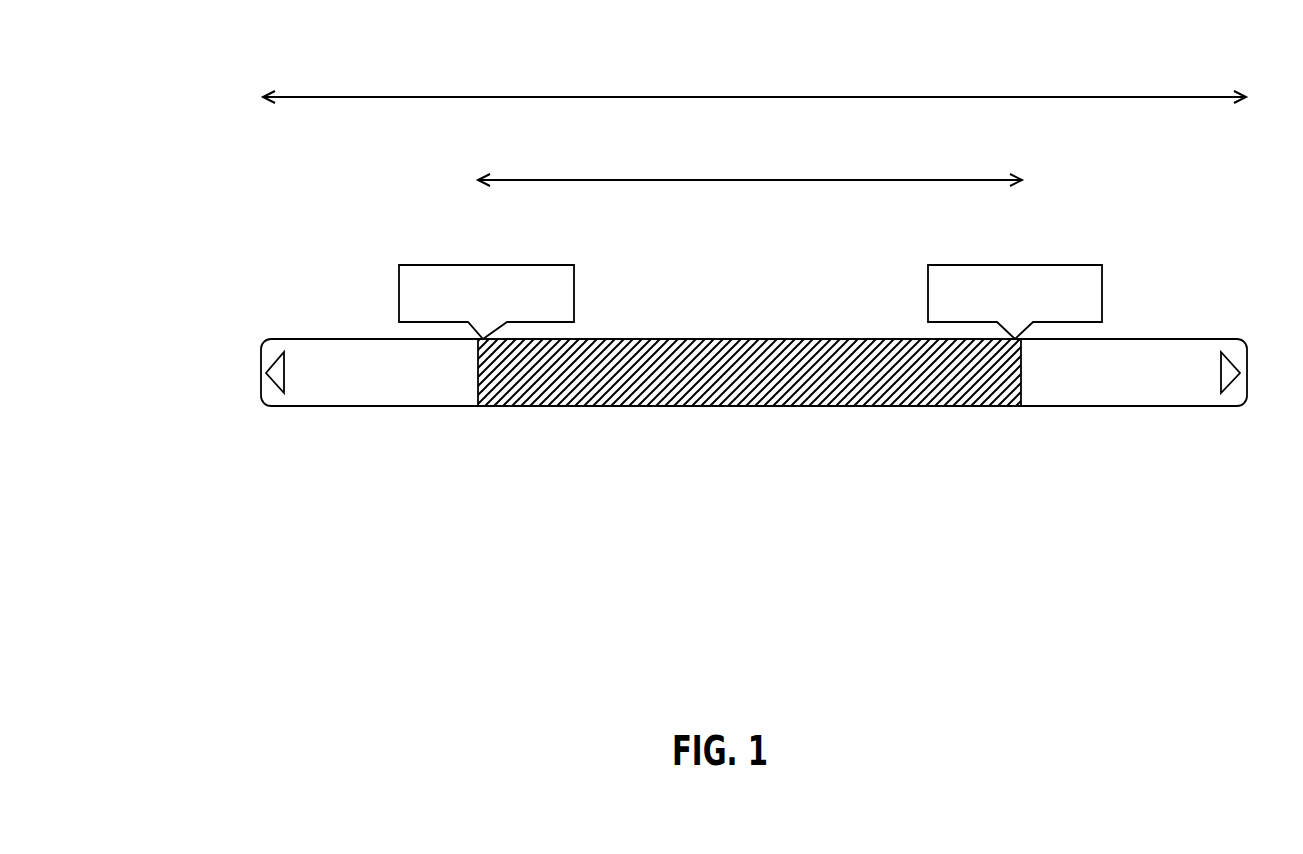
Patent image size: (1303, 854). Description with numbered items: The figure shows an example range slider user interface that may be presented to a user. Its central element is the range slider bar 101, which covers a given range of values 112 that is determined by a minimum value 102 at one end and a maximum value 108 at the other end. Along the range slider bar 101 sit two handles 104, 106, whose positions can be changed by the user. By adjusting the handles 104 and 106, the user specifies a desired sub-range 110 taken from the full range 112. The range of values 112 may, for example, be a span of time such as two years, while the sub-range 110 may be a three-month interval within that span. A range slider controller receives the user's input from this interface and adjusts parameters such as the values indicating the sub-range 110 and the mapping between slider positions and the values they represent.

The range slider bar 101 is at (193, 368).
The minimum value 102 is at (281, 426).
The handle 104 is at (478, 426).
The handle 106 is at (1021, 426).
The maximum value 108 is at (1245, 426).
The sub-range 110 is at (782, 180).
The range of values 112 is at (677, 96).